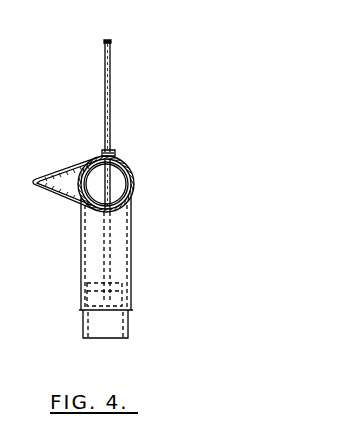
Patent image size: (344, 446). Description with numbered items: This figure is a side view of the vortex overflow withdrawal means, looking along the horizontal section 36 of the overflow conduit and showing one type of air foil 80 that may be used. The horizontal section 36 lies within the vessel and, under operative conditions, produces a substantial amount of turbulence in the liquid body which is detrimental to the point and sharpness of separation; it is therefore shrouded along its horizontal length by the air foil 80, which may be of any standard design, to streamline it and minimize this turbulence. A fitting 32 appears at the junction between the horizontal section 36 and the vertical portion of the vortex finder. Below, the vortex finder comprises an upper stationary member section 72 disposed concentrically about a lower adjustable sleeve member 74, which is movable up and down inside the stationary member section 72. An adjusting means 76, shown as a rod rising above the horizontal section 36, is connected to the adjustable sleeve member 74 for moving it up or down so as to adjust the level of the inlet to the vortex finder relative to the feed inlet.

The collar 32 is at (125, 157).
The horizontal section 36 is at (115, 183).
The upper stationary member section 72 is at (122, 242).
The adjustable sleeve member 74 is at (118, 327).
The adjusting means 76 is at (111, 112).
The air foil 80 is at (67, 175).